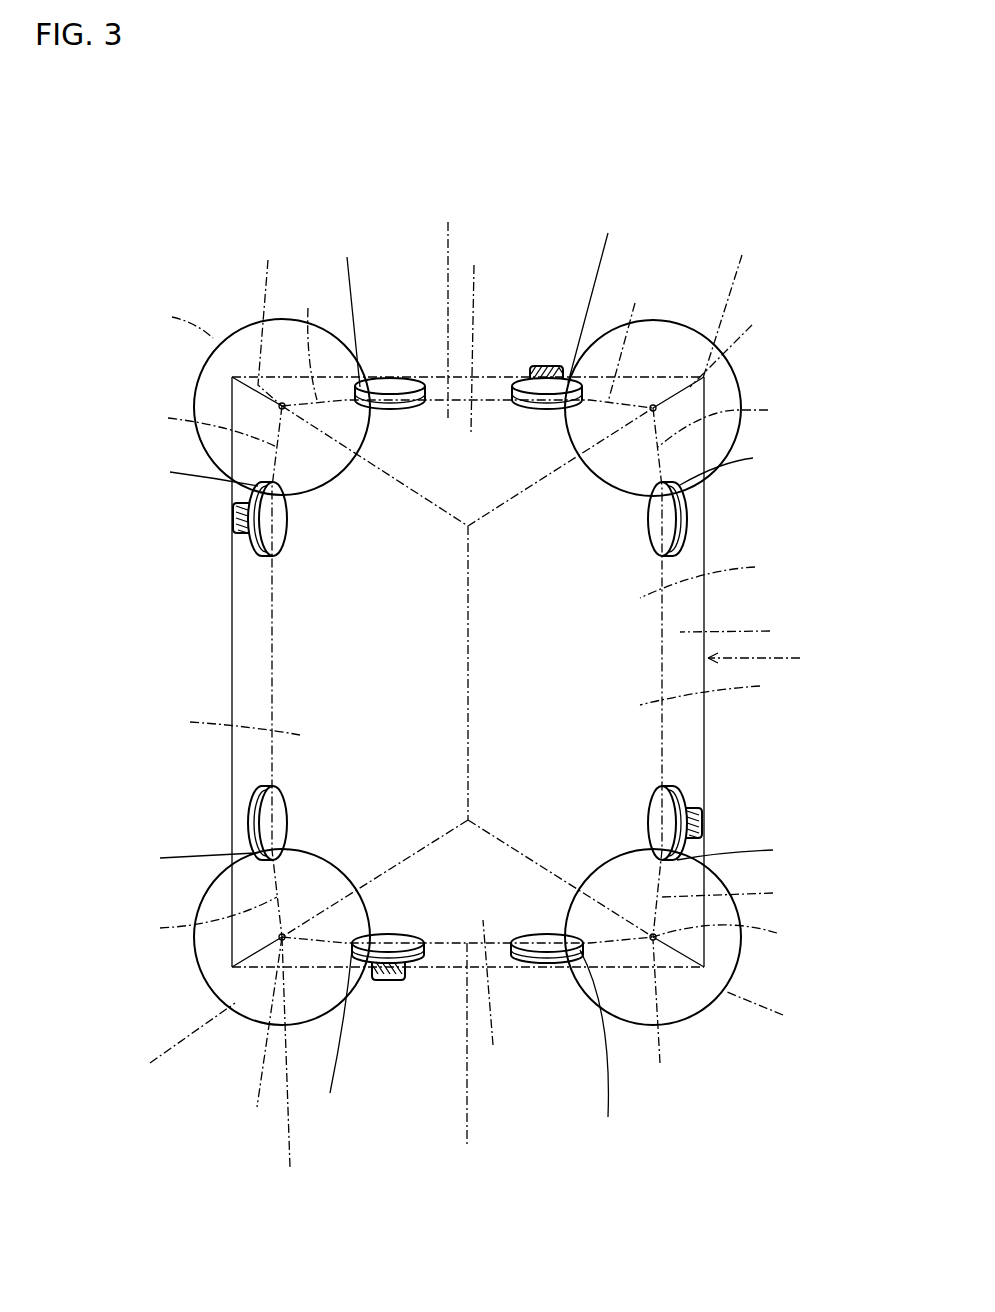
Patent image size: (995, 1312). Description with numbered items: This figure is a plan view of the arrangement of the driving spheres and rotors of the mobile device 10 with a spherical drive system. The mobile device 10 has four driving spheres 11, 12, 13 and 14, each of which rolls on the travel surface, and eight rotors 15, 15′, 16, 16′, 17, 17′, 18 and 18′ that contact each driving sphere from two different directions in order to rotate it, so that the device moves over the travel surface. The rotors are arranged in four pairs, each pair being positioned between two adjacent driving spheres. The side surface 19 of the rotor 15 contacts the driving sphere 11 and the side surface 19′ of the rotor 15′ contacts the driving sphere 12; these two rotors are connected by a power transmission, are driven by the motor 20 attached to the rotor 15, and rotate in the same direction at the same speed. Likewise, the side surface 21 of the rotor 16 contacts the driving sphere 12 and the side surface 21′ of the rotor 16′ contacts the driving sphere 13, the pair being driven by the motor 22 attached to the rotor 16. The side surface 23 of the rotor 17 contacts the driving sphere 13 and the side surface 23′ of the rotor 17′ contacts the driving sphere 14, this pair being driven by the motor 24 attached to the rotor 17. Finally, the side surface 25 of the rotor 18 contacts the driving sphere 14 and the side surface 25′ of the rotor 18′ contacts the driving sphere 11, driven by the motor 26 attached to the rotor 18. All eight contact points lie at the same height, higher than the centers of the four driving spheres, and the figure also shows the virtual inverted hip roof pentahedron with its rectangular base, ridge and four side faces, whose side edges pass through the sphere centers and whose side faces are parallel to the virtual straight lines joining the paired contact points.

The mobile device with a spherical drive system 10 is at (668, 161).
The driving sphere 11 is at (675, 998).
The driving sphere 12 is at (675, 353).
The driving sphere 13 is at (252, 333).
The driving sphere 14 is at (253, 998).
The rotor 15 is at (683, 769).
The rotor 15′ is at (700, 494).
The rotor 16 is at (508, 369).
The rotor 16′ is at (388, 368).
The rotor 17 is at (234, 551).
The rotor 17′ is at (234, 796).
The rotor 18 is at (418, 991).
The rotor 18′ is at (550, 986).
The side surface 19 is at (678, 807).
The side surface 19′ is at (688, 523).
The motor 20 is at (700, 822).
The side surface 21 is at (573, 383).
The side surface 21′ is at (405, 385).
The motor 22 is at (547, 365).
The side surface 23 is at (252, 542).
The side surface 23′ is at (250, 838).
The motor 24 is at (235, 519).
The side surface 25 is at (410, 962).
The side surface 25′ is at (540, 965).
The motor 26 is at (385, 982).